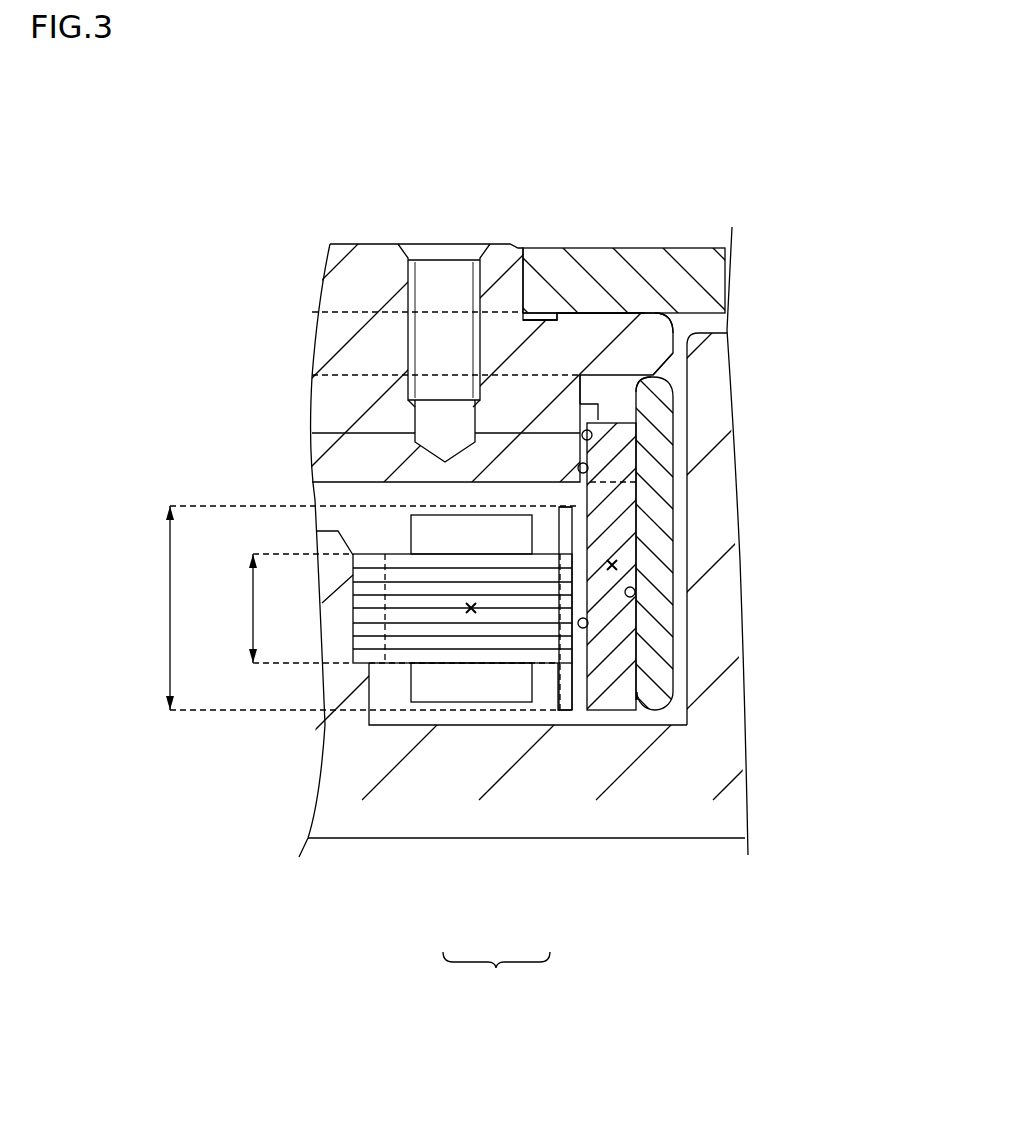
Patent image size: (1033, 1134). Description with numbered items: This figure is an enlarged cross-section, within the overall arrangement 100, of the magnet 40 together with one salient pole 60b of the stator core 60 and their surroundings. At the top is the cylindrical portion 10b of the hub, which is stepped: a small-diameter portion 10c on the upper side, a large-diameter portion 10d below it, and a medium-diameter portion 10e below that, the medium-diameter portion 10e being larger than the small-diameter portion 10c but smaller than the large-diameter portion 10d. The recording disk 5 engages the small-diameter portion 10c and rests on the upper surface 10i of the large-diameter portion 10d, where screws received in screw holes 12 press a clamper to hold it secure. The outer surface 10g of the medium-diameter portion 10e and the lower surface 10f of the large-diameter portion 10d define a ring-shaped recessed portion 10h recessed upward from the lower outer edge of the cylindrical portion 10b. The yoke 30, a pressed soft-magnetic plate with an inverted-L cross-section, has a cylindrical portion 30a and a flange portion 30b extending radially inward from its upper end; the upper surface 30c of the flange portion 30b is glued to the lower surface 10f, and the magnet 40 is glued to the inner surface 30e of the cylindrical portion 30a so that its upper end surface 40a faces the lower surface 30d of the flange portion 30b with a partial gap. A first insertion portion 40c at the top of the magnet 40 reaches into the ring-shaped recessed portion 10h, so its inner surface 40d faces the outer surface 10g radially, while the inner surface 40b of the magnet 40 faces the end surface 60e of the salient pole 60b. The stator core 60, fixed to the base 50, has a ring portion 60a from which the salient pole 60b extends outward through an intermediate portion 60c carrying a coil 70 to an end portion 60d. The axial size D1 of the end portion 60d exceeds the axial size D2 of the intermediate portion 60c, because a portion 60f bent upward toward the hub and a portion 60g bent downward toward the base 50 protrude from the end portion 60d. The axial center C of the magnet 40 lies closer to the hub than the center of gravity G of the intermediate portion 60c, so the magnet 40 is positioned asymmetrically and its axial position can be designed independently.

The recording disk 5 is at (690, 266).
The cylindrical portion 10b is at (385, 330).
The small-diameter portion 10c is at (527, 256).
The large-diameter portion 10d is at (570, 290).
The medium-diameter portion 10e is at (547, 330).
The lower surface 10f is at (612, 300).
The outer surface 10g is at (360, 432).
The ring-shaped recessed portion 10h is at (600, 438).
The upper surface 10i is at (590, 340).
The screw holes 12 is at (452, 290).
The yoke 30 is at (660, 690).
The cylindrical portion 30a is at (660, 512).
The flange portion 30b is at (648, 377).
The upper surface 30c is at (672, 335).
The lower surface 30d is at (628, 396).
The inner surface 30e is at (635, 592).
The magnet 40 is at (611, 715).
The upper end surface 40a is at (600, 412).
The inner surface 40b is at (588, 623).
The first insertion portion 40c is at (588, 468).
The inner surface 40d is at (640, 486).
The base 50 is at (707, 830).
The stator core 60 is at (398, 728).
The ring portion 60a is at (377, 645).
The salient poles 60b is at (496, 971).
The intermediate portion 60c is at (507, 643).
The end portion 60d is at (540, 650).
The end surface 60e is at (578, 700).
The protruding portion 60f is at (568, 520).
The protruding portion 60g is at (561, 712).
The coil 70 is at (428, 690).
The motor assembly 100 is at (520, 1057).
The center of the magnet C is at (618, 566).
The center of gravity G is at (471, 614).
The size of the end portion D1 is at (170, 573).
The size of the intermediate portion D2 is at (253, 599).